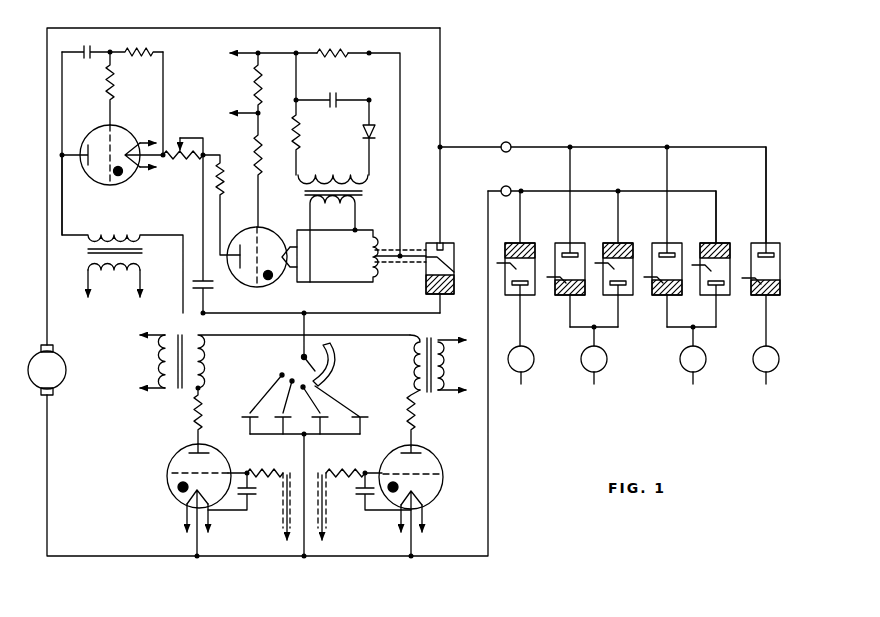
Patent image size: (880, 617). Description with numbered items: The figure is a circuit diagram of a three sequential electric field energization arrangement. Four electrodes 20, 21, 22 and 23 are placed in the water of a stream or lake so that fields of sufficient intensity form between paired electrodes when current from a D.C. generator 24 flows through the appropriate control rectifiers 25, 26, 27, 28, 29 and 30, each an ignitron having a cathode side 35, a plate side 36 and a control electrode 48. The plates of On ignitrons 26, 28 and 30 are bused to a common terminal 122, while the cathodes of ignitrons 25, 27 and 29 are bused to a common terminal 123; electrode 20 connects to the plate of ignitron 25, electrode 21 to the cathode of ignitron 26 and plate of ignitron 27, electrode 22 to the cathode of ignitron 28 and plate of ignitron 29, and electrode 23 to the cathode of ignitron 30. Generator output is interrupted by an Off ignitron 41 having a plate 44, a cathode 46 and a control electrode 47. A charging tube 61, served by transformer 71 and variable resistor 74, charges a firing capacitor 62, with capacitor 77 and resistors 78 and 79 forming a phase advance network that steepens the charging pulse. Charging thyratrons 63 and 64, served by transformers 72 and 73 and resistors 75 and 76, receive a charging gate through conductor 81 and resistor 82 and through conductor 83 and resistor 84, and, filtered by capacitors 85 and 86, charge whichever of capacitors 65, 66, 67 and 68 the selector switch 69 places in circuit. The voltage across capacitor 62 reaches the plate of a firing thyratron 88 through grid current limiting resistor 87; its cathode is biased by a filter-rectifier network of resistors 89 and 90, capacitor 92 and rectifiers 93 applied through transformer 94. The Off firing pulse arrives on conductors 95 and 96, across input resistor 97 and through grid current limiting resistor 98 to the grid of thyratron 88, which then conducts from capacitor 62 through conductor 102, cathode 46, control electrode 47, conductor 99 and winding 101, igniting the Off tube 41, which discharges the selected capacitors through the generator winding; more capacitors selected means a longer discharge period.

The electrode 20 is at (521, 393).
The electrode 21 is at (594, 393).
The electrode 22 is at (693, 393).
The electrode 23 is at (766, 393).
The D.C. generator 24 is at (40, 347).
The control rectifier 25 is at (495, 235).
The control rectifier 26 is at (546, 235).
The control rectifier 27 is at (595, 235).
The control rectifier 28 is at (643, 235).
The control rectifier 29 is at (691, 235).
The control rectifier 30 is at (741, 235).
The cathode side 35 is at (527, 243).
The plate side 36 is at (577, 253).
The Off ignitron 41 is at (426, 243).
The plate 44 is at (441, 243).
The cathode side 46 is at (454, 282).
The control electrode 47 is at (424, 268).
The control electrode 48 is at (497, 266).
The charging tube 61 is at (127, 125).
The firing capacitor 62 is at (210, 286).
The charging thyratron 63 is at (153, 455).
The charging thyratron 64 is at (441, 463).
The capacitor 65 is at (257, 403).
The capacitor 66 is at (277, 406).
The capacitor 67 is at (312, 394).
The capacitor 68 is at (374, 411).
The selector switch 69 is at (305, 349).
The transformer 71 is at (149, 268).
The transformer 72 is at (275, 352).
The transformer 73 is at (417, 334).
The variable resistor 74 is at (180, 136).
The resistor 75 is at (194, 410).
The resistor 76 is at (416, 410).
The capacitor 77 is at (88, 45).
The resistor 78 is at (135, 49).
The resistor 79 is at (116, 88).
The conductor 81 is at (284, 530).
The resistor 82 is at (280, 470).
The conductor 83 is at (326, 528).
The resistor 84 is at (350, 470).
The capacitor 85 is at (250, 497).
The capacitor 86 is at (362, 498).
The grid current limiting resistor 87 is at (224, 184).
The firing thyratron 88 is at (271, 221).
The resistor 89 is at (335, 50).
The resistor 90 is at (294, 133).
The capacitor 92 is at (338, 96).
The rectifier 93 is at (373, 134).
The transformer 94 is at (369, 198).
The conductor 95 is at (240, 52).
The conductor 96 is at (252, 112).
The input resistor 97 is at (262, 70).
The grid current limiting resistor 98 is at (252, 160).
The conductor 99 is at (388, 272).
The winding 101 is at (366, 267).
The conductor 102 is at (276, 313).
The common terminal 122 is at (509, 143).
The common terminal 123 is at (509, 187).